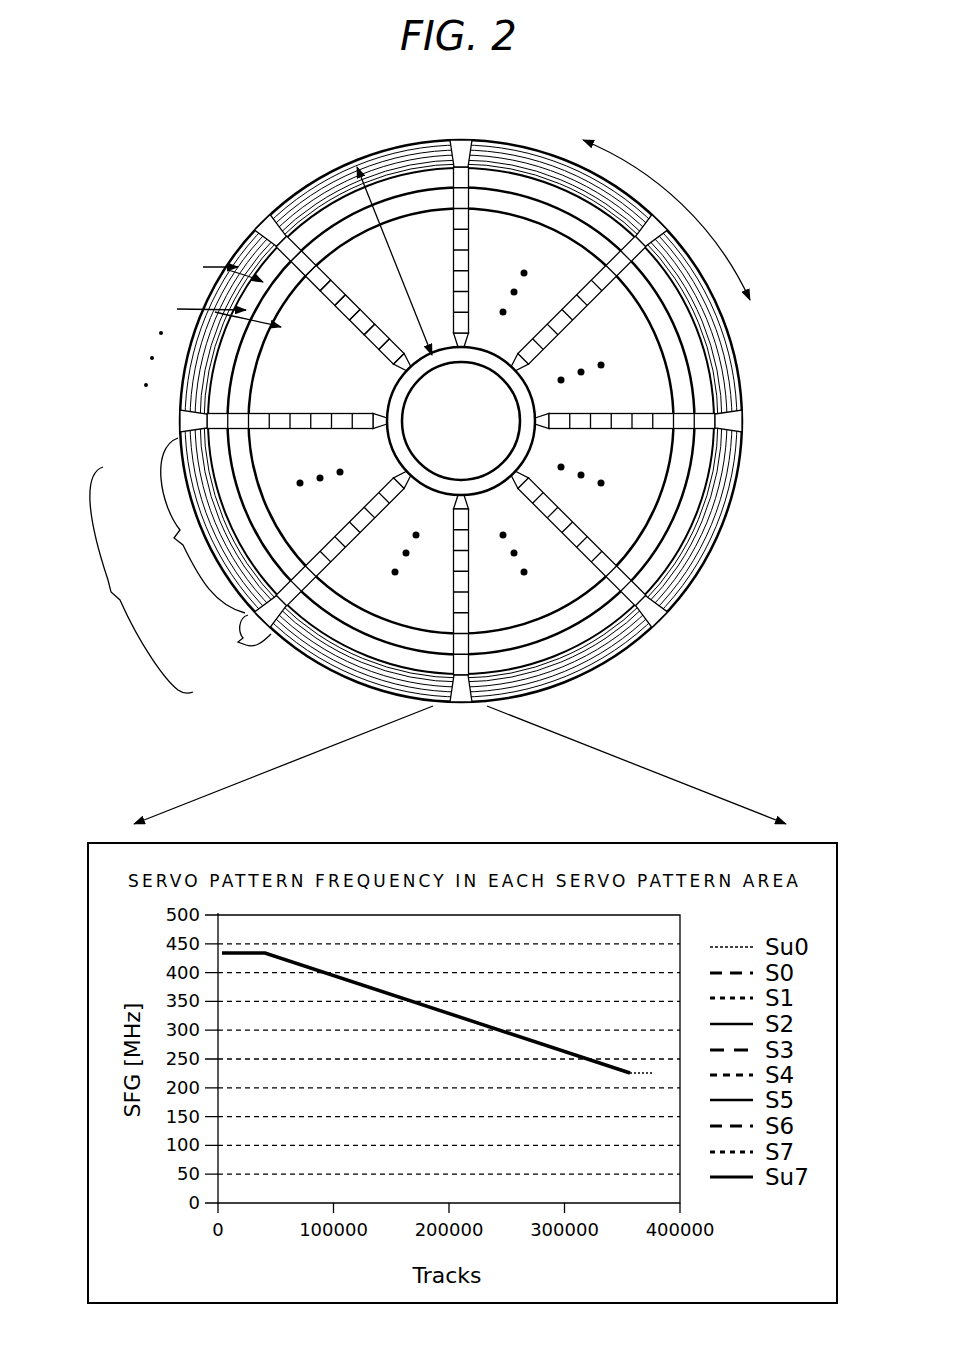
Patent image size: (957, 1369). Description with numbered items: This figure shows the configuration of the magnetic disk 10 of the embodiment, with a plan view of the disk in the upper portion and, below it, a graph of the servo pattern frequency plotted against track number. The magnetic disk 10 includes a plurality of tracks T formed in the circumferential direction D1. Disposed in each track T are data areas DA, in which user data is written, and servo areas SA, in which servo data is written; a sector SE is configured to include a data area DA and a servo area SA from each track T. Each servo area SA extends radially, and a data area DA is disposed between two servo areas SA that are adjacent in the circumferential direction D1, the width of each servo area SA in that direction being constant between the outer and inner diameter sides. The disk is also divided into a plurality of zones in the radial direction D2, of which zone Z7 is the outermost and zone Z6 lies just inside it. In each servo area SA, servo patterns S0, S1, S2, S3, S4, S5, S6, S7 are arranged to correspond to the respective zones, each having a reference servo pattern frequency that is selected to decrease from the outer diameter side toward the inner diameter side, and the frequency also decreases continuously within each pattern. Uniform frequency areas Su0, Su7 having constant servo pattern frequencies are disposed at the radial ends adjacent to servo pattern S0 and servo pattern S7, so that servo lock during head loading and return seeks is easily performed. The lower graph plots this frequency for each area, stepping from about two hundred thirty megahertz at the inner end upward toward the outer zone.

The magnetic disk 10 is at (511, 403).
The track T is at (523, 150).
The circumferential direction D1 is at (666, 220).
The radial direction D2 is at (397, 261).
The uniform frequency area Su0 is at (405, 367).
The servo pattern S0 is at (398, 362).
The servo pattern S1 is at (360, 338).
The servo pattern S2 is at (370, 340).
The servo pattern S3 is at (335, 305).
The servo pattern S4 is at (281, 328).
The servo pattern S5 is at (318, 278).
The servo pattern S6 is at (275, 248).
The servo pattern S7 is at (300, 235).
The uniform frequency area Su7 is at (270, 232).
The zone Z6 is at (215, 313).
The zone Z7 is at (219, 272).
The data area DA is at (194, 525).
The servo area SA is at (237, 638).
The sector SE is at (138, 580).